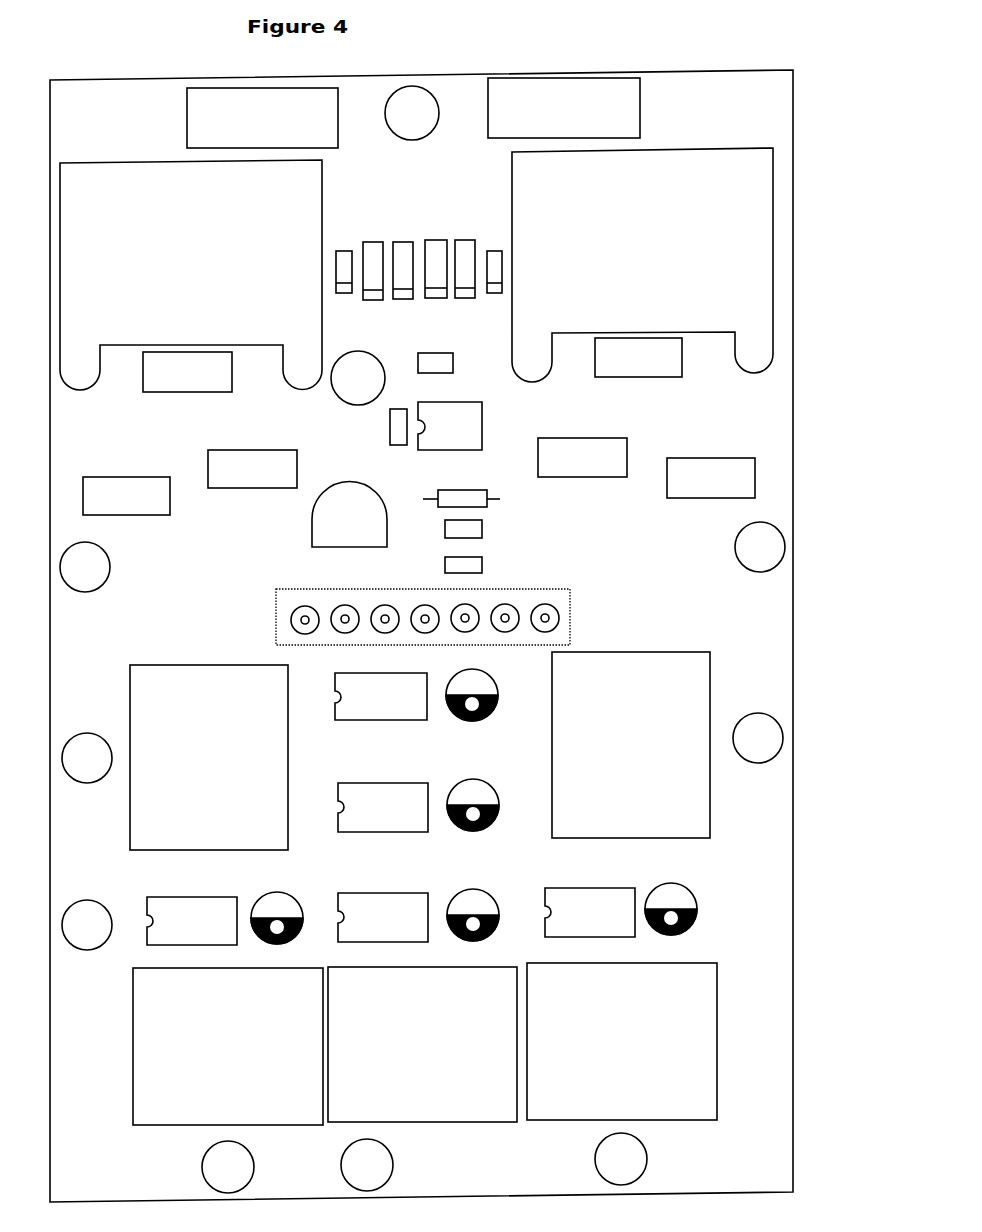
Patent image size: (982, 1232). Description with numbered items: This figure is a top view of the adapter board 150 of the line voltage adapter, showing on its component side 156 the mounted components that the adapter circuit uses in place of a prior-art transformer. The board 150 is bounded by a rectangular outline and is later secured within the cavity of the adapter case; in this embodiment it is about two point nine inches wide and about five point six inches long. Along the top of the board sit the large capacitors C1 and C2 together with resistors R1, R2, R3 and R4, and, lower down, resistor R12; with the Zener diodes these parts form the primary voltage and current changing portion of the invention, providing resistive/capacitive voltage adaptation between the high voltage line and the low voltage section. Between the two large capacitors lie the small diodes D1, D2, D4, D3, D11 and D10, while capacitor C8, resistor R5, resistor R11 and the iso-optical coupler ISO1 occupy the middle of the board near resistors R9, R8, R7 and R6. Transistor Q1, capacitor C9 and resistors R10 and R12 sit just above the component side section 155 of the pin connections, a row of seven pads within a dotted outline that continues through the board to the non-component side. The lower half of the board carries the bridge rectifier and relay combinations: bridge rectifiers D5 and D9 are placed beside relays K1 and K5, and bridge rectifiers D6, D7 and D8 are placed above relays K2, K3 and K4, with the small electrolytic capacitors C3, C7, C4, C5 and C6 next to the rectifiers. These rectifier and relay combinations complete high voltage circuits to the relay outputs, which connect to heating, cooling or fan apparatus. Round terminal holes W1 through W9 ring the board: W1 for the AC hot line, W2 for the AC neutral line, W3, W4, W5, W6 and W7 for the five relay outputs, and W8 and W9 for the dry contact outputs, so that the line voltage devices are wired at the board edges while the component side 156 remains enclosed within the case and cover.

The board 150 is at (816, 768).
The component side section 155 is at (581, 595).
The component side 156 is at (776, 935).
The resistor R1 is at (245, 118).
The resistor R2 is at (583, 108).
The resistor R3 is at (187, 383).
The resistor R4 is at (638, 367).
The resistor R5 is at (453, 364).
The resistor R6 is at (126, 486).
The resistor R7 is at (252, 459).
The resistor R8 is at (711, 468).
The resistor R9 is at (582, 448).
The resistor R10 is at (487, 527).
The resistor R11 is at (379, 432).
The resistor R12 is at (487, 564).
The capacitor C1 is at (191, 265).
The capacitor C2 is at (642, 253).
The capacitor C3 is at (487, 695).
The capacitor C4 is at (277, 906).
The capacitor C5 is at (473, 904).
The capacitor C6 is at (671, 897).
The capacitor C7 is at (488, 805).
The capacitor C8 is at (351, 387).
The capacitor C9 is at (480, 499).
The diode D1 is at (374, 260).
The diode D2 is at (404, 260).
The diode D3 is at (468, 258).
The diode D4 is at (436, 259).
The bridge rectifier D5 is at (366, 697).
The bridge rectifier D6 is at (192, 910).
The bridge rectifier D7 is at (383, 907).
The bridge rectifier D8 is at (590, 902).
The bridge rectifier D9 is at (368, 807).
The diode D10 is at (492, 290).
The diode D11 is at (349, 290).
The iso-optical coupler ISO1 is at (475, 426).
The transistor Q1 is at (334, 515).
The relay K1 is at (209, 746).
The relay K2 is at (228, 1036).
The relay K3 is at (422, 1033).
The relay K4 is at (622, 1032).
The relay K5 is at (631, 734).
The AC hot wire terminal (AC-H) W1 is at (412, 140).
The AC neutral wire terminal (AC-N) W2 is at (88, 953).
The relay 1 wire terminal (REL1) W3 is at (88, 785).
The relay 2 wire terminal (REL2) W4 is at (255, 1167).
The relay 3 wire terminal (REL3) W5 is at (394, 1165).
The relay 4 wire terminal (REL4) W6 is at (650, 1159).
The relay 5 wire terminal (REL5) W7 is at (758, 767).
The dry contact 1 wire terminal (DRY1) W8 is at (759, 575).
The dry contact 2 wire terminal (DRY2) W9 is at (84, 594).